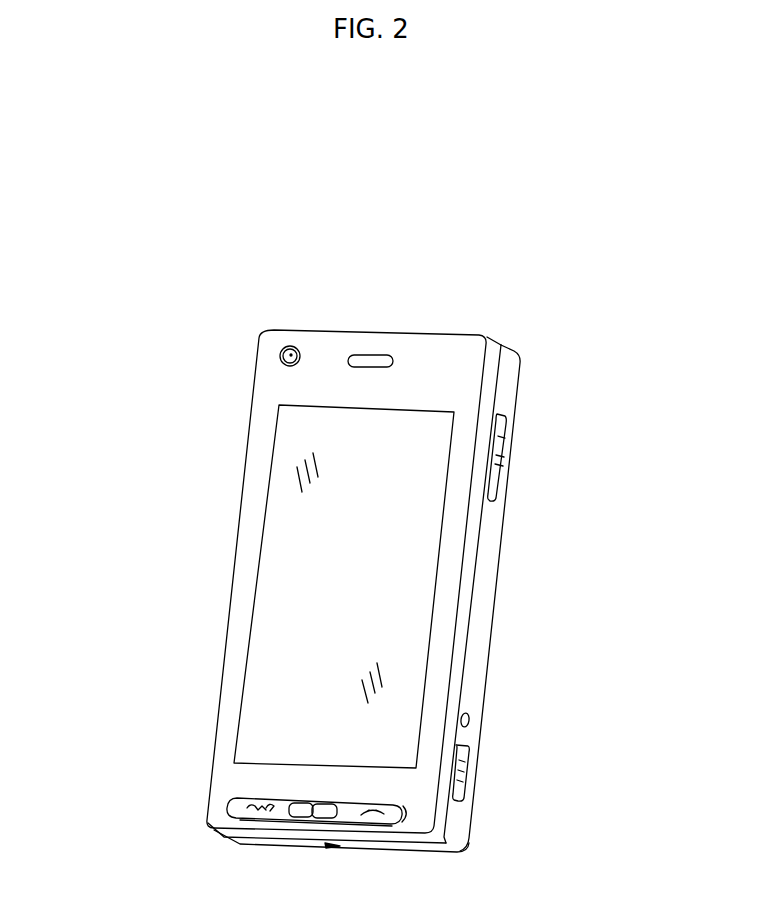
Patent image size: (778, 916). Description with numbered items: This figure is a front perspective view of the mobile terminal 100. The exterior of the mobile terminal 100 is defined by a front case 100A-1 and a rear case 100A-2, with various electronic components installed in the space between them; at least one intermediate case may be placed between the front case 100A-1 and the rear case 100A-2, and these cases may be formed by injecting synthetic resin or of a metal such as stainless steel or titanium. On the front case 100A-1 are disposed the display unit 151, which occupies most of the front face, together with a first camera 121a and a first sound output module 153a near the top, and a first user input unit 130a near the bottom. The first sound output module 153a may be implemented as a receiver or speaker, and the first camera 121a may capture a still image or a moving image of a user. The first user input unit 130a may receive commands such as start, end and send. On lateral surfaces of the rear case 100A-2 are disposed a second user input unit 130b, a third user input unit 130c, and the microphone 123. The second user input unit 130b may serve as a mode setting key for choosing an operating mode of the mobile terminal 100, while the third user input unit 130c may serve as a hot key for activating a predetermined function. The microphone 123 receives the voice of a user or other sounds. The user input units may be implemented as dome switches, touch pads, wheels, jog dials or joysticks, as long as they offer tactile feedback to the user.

The mobile terminal 100 is at (204, 292).
The front case 100A-1 is at (494, 344).
The rear case 100A-2 is at (511, 378).
The display unit 151 is at (280, 572).
The first camera 121a is at (290, 346).
The first sound output module 153a is at (371, 355).
The first user input unit 130a is at (250, 797).
The second user input unit 130b is at (500, 456).
The third user input unit 130c is at (464, 763).
The microphone 123 is at (333, 848).